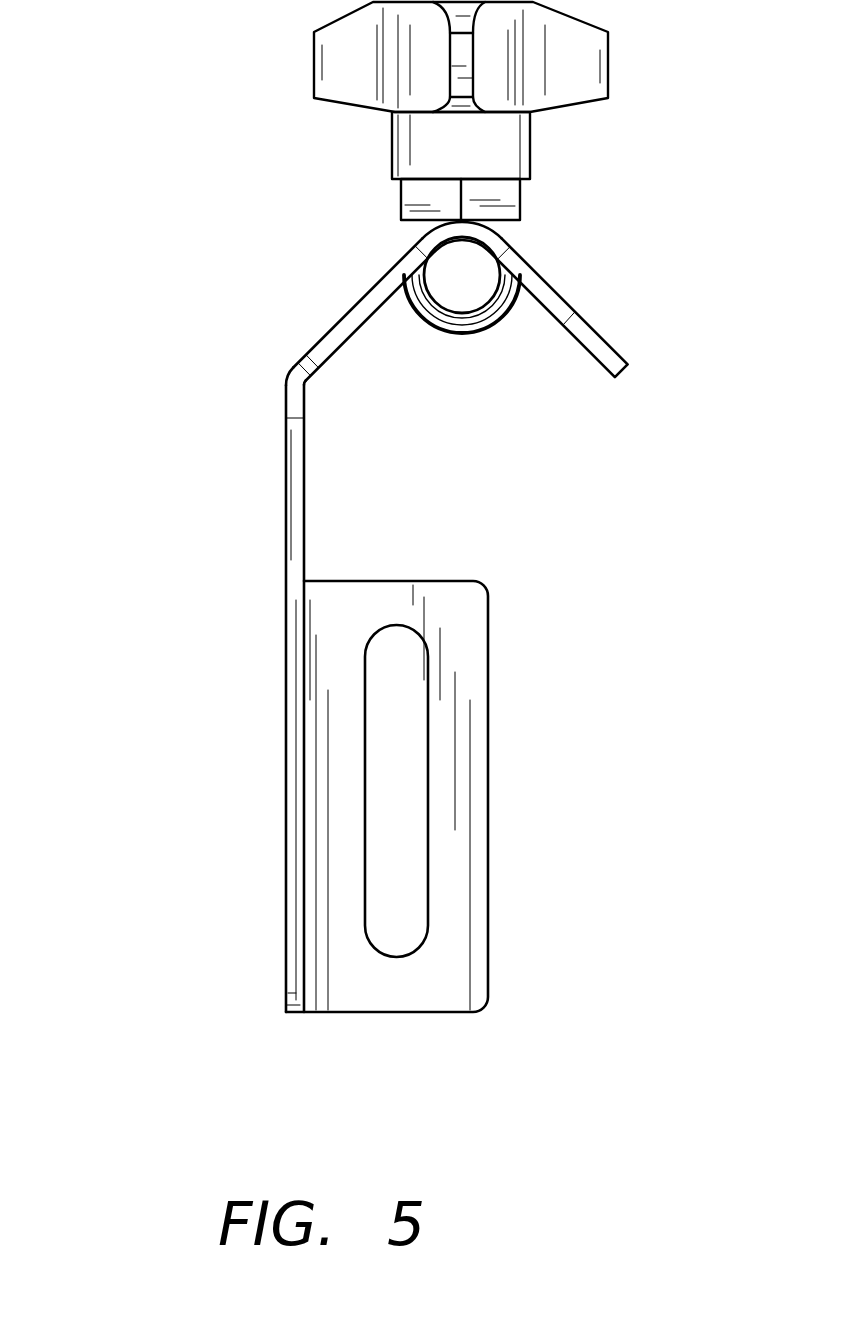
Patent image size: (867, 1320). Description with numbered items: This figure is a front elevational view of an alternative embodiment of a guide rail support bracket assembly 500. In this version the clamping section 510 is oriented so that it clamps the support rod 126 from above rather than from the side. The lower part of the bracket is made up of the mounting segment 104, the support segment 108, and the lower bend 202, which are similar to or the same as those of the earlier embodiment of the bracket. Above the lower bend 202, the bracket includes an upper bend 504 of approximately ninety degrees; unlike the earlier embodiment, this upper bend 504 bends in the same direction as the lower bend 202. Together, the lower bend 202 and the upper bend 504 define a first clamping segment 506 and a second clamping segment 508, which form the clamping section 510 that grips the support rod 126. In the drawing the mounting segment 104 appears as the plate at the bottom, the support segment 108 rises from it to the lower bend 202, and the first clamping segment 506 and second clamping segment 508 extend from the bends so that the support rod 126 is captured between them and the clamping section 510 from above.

The guide rail support bracket assembly 500 is at (232, 416).
The clamping section 510 is at (566, 228).
The upper bend 504 is at (445, 266).
The support rod 126 is at (457, 290).
The first clamping segment 506 is at (335, 320).
The second clamping segment 508 is at (582, 317).
The lower bend 202 is at (333, 403).
The support segment 108 is at (285, 562).
The mounting segment 104 is at (488, 680).